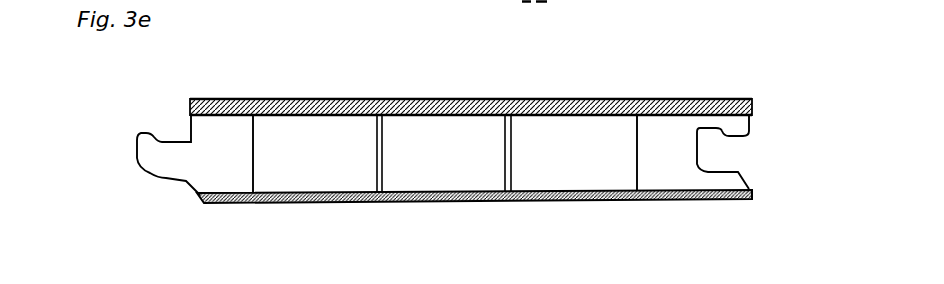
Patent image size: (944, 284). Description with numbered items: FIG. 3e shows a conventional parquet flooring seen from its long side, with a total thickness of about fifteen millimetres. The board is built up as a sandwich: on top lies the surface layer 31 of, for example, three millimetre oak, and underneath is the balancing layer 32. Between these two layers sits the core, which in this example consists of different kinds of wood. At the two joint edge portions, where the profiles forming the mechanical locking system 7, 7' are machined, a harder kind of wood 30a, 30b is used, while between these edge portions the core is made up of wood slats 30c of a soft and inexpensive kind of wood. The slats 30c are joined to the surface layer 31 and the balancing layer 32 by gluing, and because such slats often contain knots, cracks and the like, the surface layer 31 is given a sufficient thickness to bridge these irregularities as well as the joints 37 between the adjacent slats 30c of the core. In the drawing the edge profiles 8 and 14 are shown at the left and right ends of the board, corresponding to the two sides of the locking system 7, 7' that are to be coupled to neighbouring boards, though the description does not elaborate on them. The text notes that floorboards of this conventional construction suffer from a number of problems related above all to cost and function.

The mechanical locking system 7 is at (88, 140).
The mechanical locking system 7' is at (798, 157).
The hook-shaped edge profile 8 is at (152, 141).
The hook-shaped edge profile (opposite side) 14 is at (711, 128).
The harder kind of wood 30a is at (219, 141).
The harder kind of wood 30b is at (672, 133).
The wood slats 30c is at (465, 135).
The surface layer 31 is at (598, 98).
The balancing layer 32 is at (440, 204).
The joints 37 is at (378, 98).